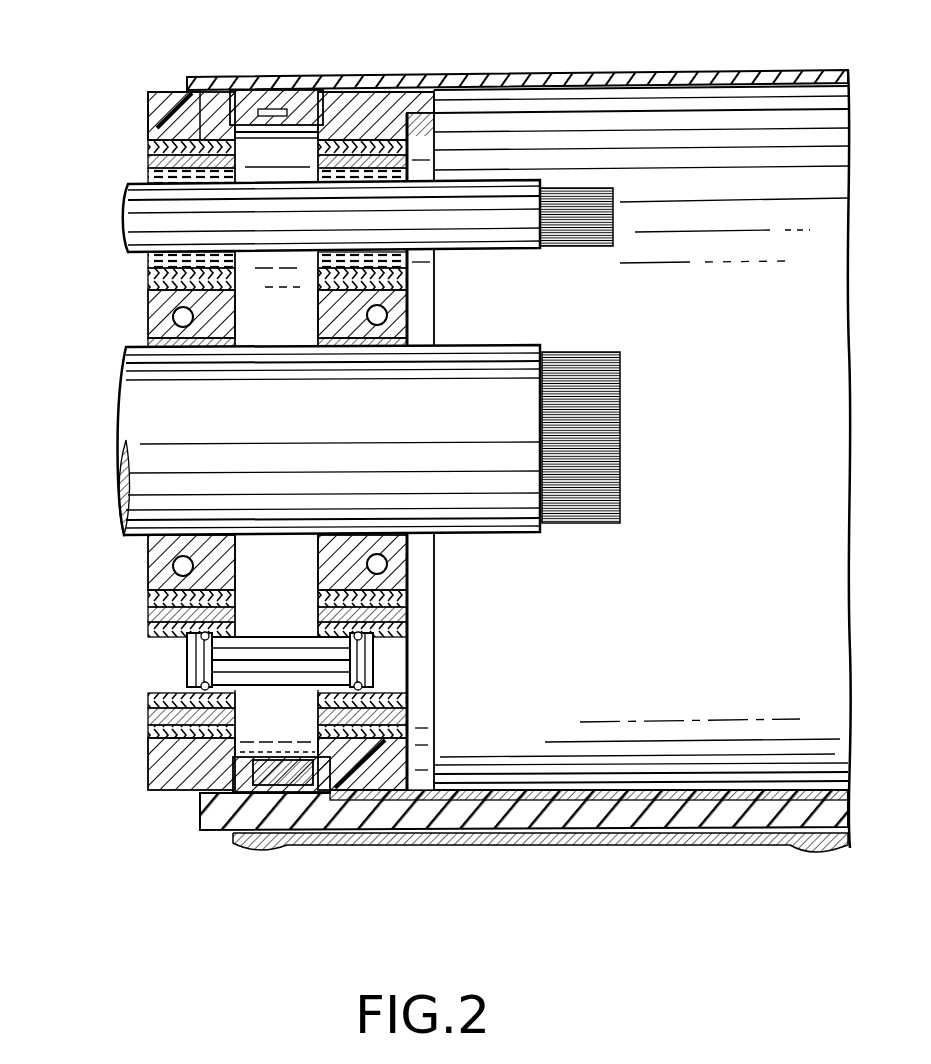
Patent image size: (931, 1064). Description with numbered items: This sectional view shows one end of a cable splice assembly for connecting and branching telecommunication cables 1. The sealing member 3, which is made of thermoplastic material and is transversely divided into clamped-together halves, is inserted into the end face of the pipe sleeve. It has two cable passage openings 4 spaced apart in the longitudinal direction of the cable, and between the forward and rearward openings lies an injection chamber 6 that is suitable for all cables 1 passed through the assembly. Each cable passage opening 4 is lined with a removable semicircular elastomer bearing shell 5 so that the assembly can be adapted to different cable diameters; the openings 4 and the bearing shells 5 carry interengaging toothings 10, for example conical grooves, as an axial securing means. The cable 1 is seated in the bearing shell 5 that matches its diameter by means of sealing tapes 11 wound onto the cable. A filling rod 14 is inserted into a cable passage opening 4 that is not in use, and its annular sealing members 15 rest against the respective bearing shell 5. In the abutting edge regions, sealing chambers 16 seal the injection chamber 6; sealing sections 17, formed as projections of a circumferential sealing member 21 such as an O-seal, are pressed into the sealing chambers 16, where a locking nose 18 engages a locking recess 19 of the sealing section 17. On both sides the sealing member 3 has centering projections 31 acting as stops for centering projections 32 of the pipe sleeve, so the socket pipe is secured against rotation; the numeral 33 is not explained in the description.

The cable 1 is at (167, 224).
The sealing member 3 is at (157, 796).
The cable passage opening 4 is at (342, 745).
The bearing shell 5 is at (152, 598).
The injection chamber 6 is at (257, 557).
The interengaging toothings 10 is at (165, 125).
The sealing tape 11 is at (413, 262).
The filling rod 14 is at (367, 672).
The annular sealing member 15 is at (362, 688).
The sealing chamber 16 is at (197, 795).
The sealing section 17 is at (232, 795).
The locking nose 18 is at (297, 767).
The locking recess 19 is at (267, 763).
The circumferential sealing member 21 is at (287, 88).
The centering projection 31 is at (150, 100).
The centering projection 32 is at (165, 92).
The bottom ring 33 is at (370, 765).